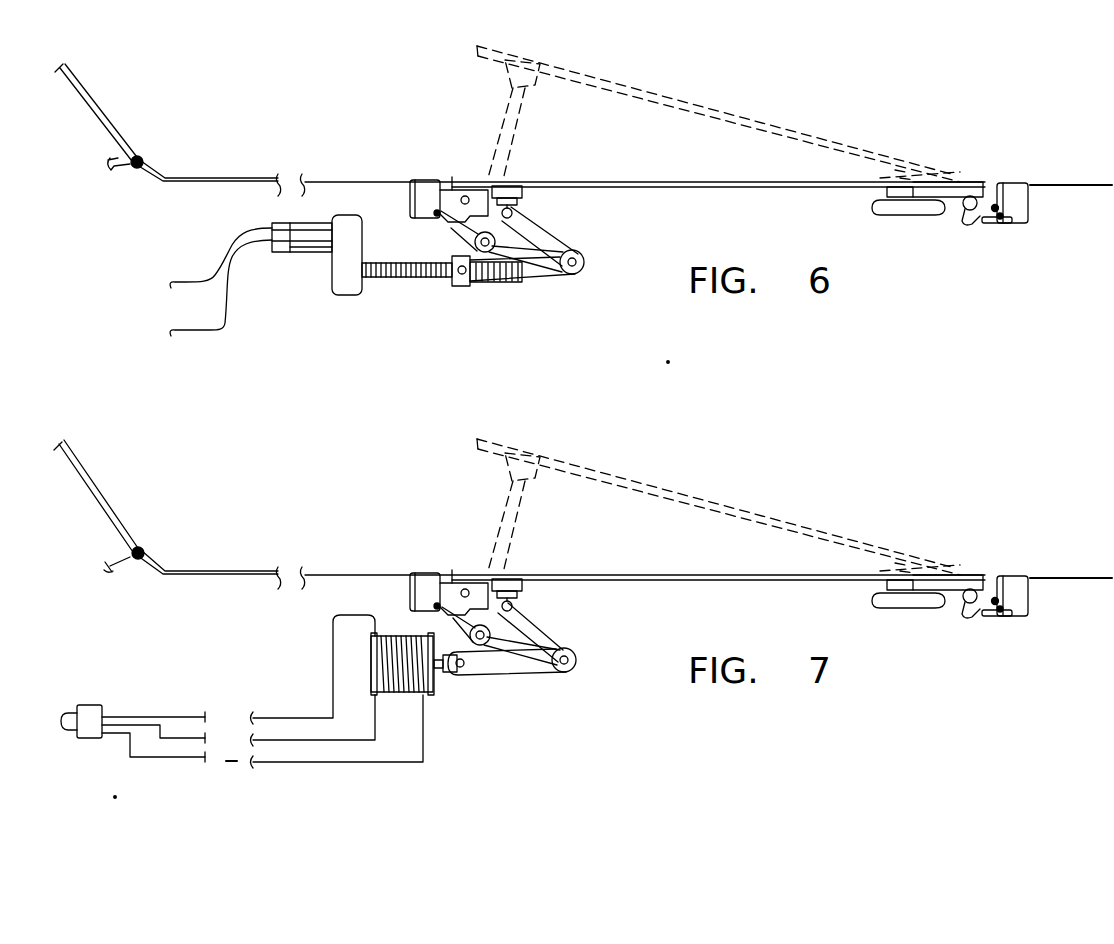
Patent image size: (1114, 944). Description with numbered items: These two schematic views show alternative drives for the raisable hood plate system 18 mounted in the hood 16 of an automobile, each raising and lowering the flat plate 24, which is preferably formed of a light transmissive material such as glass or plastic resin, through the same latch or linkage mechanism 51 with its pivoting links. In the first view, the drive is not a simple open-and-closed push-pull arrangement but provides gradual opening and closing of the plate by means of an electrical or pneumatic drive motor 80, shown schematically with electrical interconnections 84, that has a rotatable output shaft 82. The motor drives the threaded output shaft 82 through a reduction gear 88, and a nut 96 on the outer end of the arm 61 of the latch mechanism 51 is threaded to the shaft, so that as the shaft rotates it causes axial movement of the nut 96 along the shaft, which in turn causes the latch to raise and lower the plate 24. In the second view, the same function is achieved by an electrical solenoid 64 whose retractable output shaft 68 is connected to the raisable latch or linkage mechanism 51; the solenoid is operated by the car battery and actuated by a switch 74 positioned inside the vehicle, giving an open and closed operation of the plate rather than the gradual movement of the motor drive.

In FIG. 6, the hood 16 is at (1060, 185).
In FIG. 7, the hood 16 is at (1042, 578).
In FIG. 6, the raisable hood plate system 18 is at (87, 93).
In FIG. 7, the raisable hood plate system 18 is at (90, 473).
In FIG. 6, the flat plate 24 is at (647, 177).
In FIG. 7, the flat plate 24 is at (647, 571).
In FIG. 6, the latch mechanism 51 is at (600, 239).
In FIG. 7, the latch mechanism 51 is at (590, 631).
In FIG. 6, the arm 61 is at (495, 285).
In FIG. 7, the electrical solenoid 64 is at (400, 693).
In FIG. 7, the retractable output shaft 68 is at (437, 676).
In FIG. 7, the switch 74 is at (93, 705).
In FIG. 6, the drive motor 80 is at (302, 248).
In FIG. 6, the output shaft 82 is at (408, 280).
In FIG. 6, the electrical interconnections 84 is at (193, 280).
In FIG. 6, the reduction gear 88 is at (342, 283).
In FIG. 6, the nut 96 is at (462, 290).